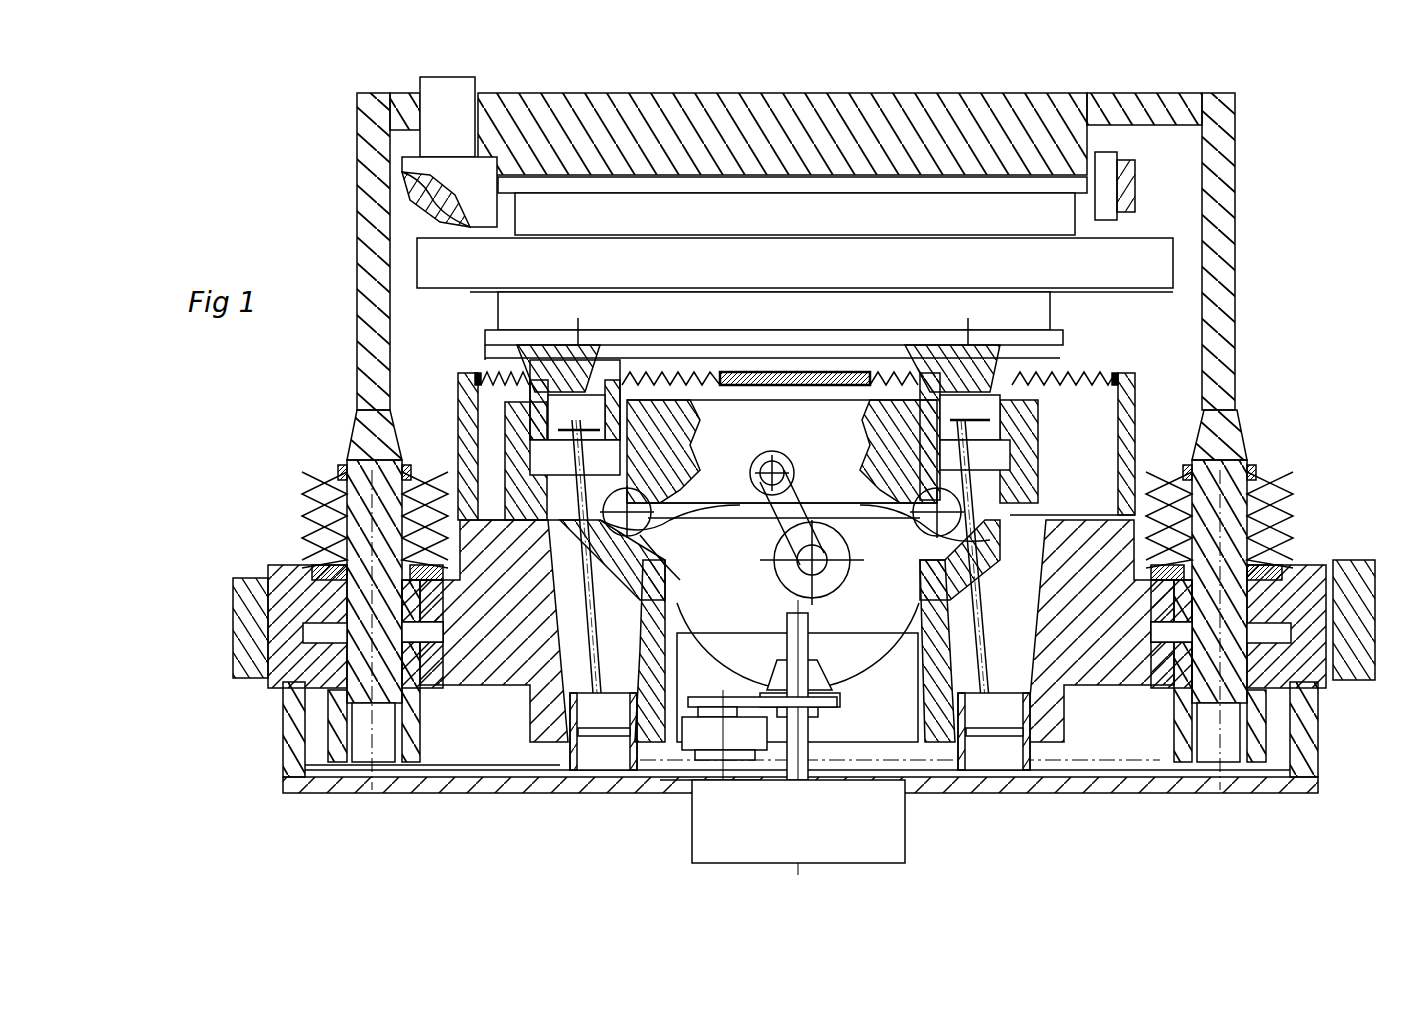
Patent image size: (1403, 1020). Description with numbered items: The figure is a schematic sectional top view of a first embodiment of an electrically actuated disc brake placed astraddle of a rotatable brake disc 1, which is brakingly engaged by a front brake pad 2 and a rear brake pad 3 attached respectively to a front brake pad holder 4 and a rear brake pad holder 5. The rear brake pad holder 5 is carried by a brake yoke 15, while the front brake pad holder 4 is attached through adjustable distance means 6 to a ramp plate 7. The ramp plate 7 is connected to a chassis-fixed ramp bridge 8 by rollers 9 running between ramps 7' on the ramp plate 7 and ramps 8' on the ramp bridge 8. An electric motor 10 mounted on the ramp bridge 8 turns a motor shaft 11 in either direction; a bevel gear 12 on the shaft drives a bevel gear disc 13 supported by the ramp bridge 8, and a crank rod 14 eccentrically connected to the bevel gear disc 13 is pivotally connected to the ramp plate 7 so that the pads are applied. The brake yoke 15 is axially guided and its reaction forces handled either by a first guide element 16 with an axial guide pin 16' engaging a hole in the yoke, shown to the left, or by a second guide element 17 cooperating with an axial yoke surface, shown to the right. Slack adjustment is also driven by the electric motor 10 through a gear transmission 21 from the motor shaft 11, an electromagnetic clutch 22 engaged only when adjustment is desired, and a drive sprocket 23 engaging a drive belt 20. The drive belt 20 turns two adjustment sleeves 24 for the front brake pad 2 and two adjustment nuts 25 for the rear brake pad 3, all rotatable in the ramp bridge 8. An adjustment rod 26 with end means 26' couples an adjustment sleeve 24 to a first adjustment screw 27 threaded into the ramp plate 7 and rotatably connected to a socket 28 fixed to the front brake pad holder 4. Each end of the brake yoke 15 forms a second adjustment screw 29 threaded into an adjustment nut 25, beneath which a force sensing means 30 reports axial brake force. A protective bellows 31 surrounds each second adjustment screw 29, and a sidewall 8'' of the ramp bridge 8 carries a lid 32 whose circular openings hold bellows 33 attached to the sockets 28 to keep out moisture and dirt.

The brake disc 1 is at (1160, 265).
The front brake pad 2 is at (1032, 304).
The rear brake pad 3 is at (940, 205).
The front brake pad holder 4 is at (1060, 340).
The rear brake pad holder 5 is at (975, 178).
The adjustable distance means 6 is at (490, 357).
The ramp plate 7 is at (673, 451).
The ramps 7' is at (785, 470).
The ramp bridge 8 is at (780, 641).
The ramps 8' is at (815, 542).
The sidewall 8'' is at (796, 446).
The rollers 9 is at (782, 531).
The electric motor 10 is at (875, 830).
The motor shaft 11 is at (810, 728).
The bevel gear 12 is at (835, 690).
The bevel gear disc 13 is at (855, 650).
The crank rod 14 is at (784, 537).
The brake yoke 15 is at (372, 205).
The first guide element 16 is at (471, 133).
The axial guide pin 16' is at (416, 98).
The second guide element 17 is at (1105, 162).
The drive belt 20 is at (1125, 772).
The gear transmission 21 is at (722, 698).
The electromagnetic clutch 22 is at (700, 735).
The drive sprocket 23 is at (705, 765).
The adjustment sleeves 24 is at (575, 765).
The adjustment nuts 25 is at (330, 762).
The adjustment rod 26 is at (799, 582).
The end means 26' is at (774, 509).
The first adjustment screws 27 is at (617, 395).
The socket 28 is at (575, 390).
The second adjustment screw 29 is at (370, 548).
The force sensing means 30 is at (292, 600).
The protective bellows 31 is at (330, 492).
The lid 32 is at (475, 378).
The bellows 33 is at (665, 390).